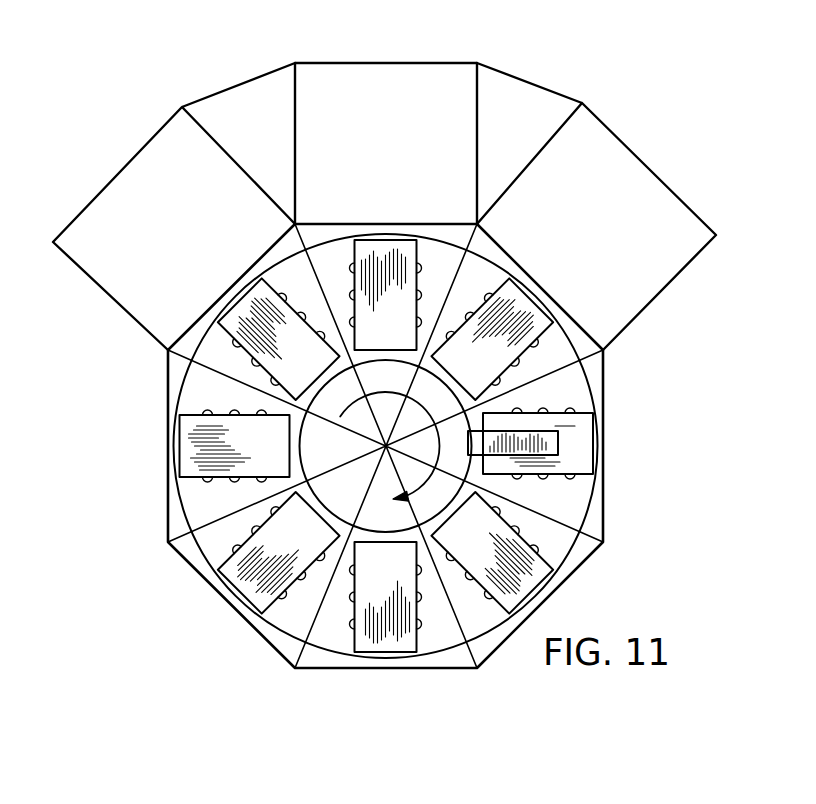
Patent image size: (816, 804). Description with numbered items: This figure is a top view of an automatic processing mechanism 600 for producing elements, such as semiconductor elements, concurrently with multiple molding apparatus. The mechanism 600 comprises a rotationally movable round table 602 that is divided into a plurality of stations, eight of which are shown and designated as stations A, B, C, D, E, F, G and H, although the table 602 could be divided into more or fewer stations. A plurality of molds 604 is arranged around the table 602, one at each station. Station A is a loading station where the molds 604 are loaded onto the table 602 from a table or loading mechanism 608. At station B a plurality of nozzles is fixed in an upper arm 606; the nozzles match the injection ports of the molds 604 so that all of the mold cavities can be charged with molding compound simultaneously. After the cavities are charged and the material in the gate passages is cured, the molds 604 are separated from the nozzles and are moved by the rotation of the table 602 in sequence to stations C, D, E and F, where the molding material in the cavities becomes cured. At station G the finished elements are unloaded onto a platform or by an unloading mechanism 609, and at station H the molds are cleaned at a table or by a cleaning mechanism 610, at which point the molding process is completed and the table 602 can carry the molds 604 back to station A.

The automatic processing mechanism 600 is at (396, 394).
The rotationally movable round table 602 is at (203, 390).
The molds 604 is at (397, 418).
The upper arm 606 is at (552, 438).
The loading mechanism 608 is at (660, 190).
The unloading mechanism 609 is at (143, 208).
The cleaning mechanism 610 is at (372, 108).
The loading station A is at (557, 355).
The charging station B is at (558, 497).
The curing station C is at (560, 535).
The curing station D is at (433, 615).
The curing station E is at (297, 597).
The curing station F is at (207, 510).
The unloading station G is at (222, 363).
The cleaning station H is at (337, 262).